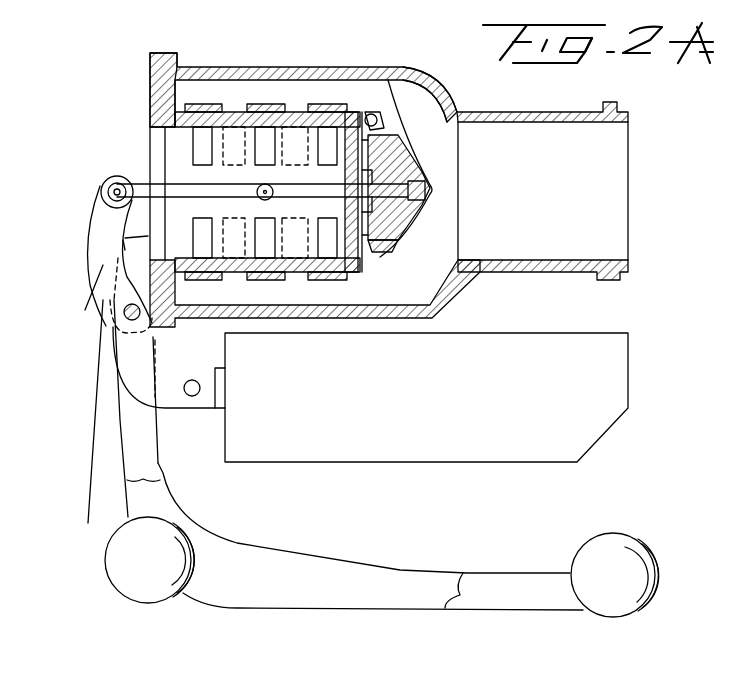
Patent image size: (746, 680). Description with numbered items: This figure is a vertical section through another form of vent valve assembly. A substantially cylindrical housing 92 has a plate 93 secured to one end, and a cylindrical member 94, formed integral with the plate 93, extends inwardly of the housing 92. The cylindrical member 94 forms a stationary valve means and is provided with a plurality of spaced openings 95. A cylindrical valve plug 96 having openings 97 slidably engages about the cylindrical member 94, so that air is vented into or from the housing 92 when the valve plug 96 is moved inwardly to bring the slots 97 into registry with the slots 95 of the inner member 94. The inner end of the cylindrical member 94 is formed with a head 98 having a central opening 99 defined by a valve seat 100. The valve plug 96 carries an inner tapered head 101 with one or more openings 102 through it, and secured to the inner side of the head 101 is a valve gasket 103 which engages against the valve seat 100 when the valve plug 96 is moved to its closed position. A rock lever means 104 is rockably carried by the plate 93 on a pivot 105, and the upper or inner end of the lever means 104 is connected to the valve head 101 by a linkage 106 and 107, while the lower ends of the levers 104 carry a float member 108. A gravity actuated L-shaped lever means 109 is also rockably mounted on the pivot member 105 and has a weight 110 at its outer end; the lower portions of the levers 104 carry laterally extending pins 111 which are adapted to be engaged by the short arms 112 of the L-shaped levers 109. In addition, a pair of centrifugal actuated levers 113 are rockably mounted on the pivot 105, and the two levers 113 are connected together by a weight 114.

The housing 92 is at (450, 297).
The plate 93 is at (158, 93).
The cylindrical member 94 is at (235, 112).
The openings 95 is at (196, 142).
The valve plug 96 is at (327, 112).
The openings 97 is at (300, 112).
The head 98 is at (378, 135).
The central opening 99 is at (348, 207).
The valve seat 100 is at (398, 248).
The tapered head 101 is at (392, 158).
The openings 102 is at (376, 112).
The valve gasket 103 is at (432, 170).
The rock lever means 104 is at (130, 318).
The pivot 105 is at (118, 327).
The linkage 106 is at (216, 190).
The linkage 107 is at (288, 186).
The float member 108 is at (411, 447).
The L-shaped lever means 109 is at (400, 572).
The weight 110 is at (632, 555).
The pins 111 is at (202, 386).
The short arms 112 is at (112, 440).
The centrifugal actuated levers 113 is at (148, 466).
The weight 114 is at (118, 545).